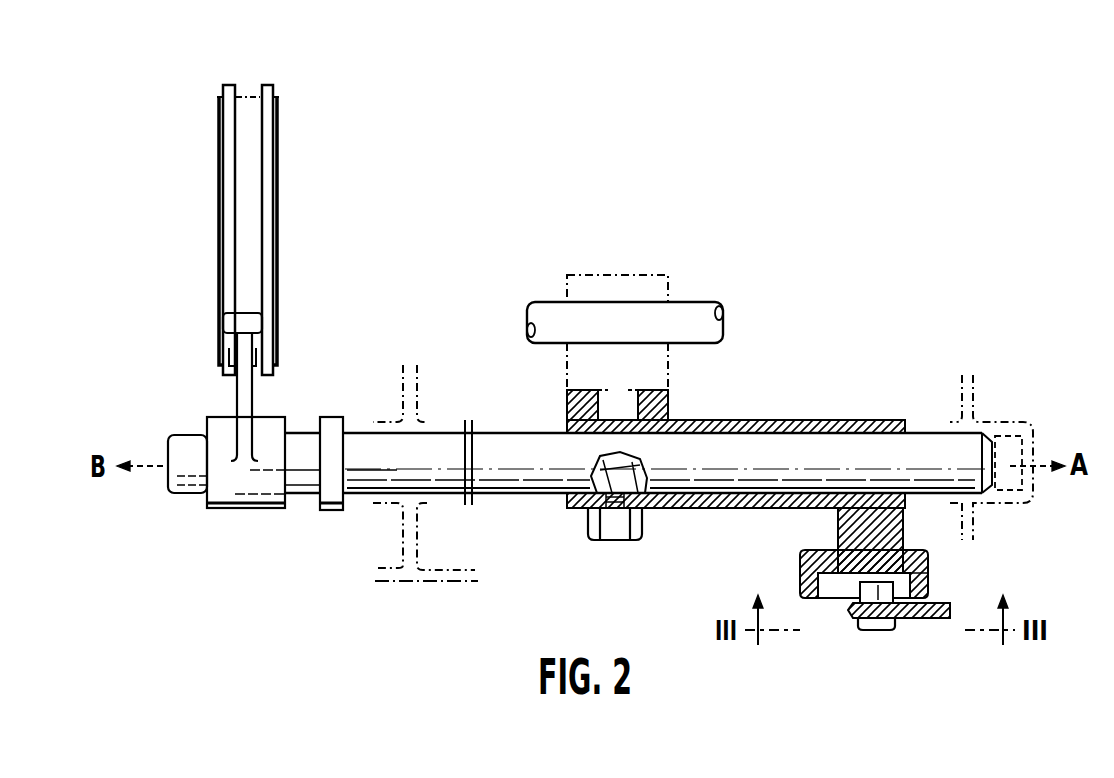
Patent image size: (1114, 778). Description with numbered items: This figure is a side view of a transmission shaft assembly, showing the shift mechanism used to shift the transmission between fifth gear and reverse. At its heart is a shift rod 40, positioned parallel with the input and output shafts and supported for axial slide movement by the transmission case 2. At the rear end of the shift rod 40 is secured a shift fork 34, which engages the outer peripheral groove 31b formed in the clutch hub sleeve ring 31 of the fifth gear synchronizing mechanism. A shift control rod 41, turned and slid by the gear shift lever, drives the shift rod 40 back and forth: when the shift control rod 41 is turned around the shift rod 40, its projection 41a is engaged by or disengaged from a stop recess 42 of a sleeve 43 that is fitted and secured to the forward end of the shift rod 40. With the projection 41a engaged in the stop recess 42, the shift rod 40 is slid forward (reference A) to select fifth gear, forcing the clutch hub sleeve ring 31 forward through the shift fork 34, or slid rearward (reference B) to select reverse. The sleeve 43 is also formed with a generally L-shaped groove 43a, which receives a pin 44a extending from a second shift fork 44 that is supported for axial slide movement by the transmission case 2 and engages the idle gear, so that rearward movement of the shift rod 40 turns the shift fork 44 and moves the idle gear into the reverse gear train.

The transmission case 2 is at (418, 550).
The clutch hub sleeve ring 31 is at (280, 152).
The outer peripheral groove 31b is at (248, 96).
The shift fork 34 is at (256, 404).
The shift rod 40 is at (515, 433).
The shift control rod 41 is at (692, 300).
The projection 41a is at (645, 275).
The stop recess 42 is at (636, 392).
The sleeve 43 is at (860, 422).
The L-shaped groove 43a is at (833, 590).
The shift fork 44 is at (925, 620).
The pin 44a is at (929, 577).